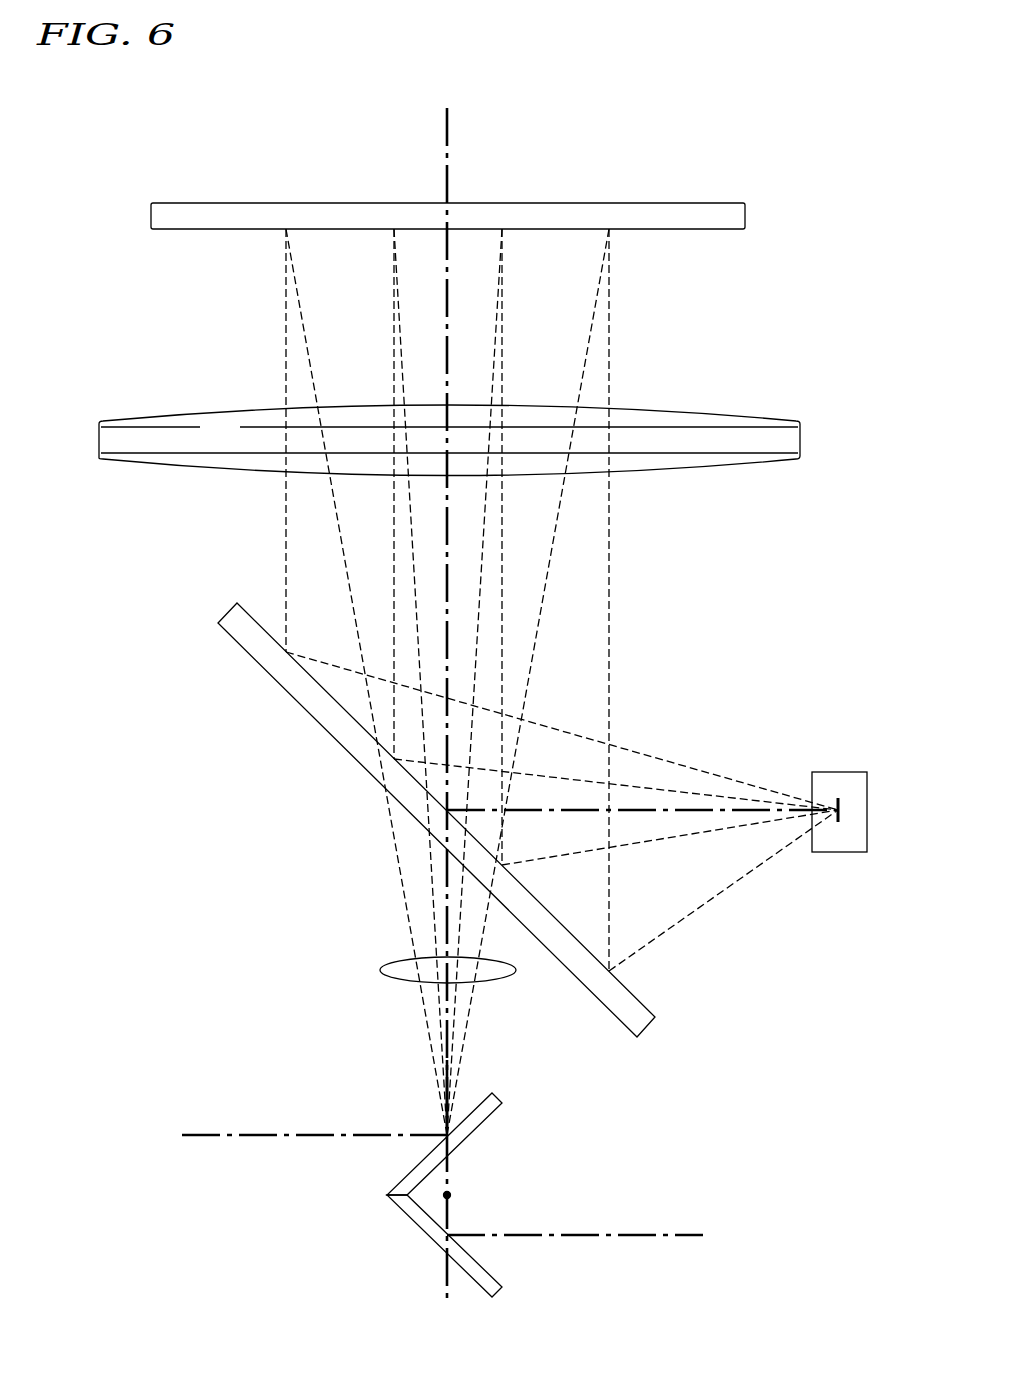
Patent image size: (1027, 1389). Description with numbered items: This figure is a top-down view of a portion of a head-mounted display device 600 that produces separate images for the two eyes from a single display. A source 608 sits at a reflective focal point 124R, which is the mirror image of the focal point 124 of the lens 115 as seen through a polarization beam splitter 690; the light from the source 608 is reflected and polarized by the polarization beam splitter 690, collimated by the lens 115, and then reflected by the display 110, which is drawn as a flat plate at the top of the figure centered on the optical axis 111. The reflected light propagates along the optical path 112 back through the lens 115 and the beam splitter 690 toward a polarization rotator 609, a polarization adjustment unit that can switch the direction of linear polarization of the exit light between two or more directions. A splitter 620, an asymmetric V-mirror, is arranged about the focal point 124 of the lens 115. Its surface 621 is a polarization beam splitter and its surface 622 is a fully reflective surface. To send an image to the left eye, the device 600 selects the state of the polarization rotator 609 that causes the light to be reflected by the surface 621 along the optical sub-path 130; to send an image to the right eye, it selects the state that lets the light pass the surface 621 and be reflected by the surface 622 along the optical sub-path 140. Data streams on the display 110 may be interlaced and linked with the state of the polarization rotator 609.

The device 600 is at (126, 134).
The display 110 is at (642, 202).
The optical axis 111 is at (447, 121).
The optical path 112 is at (446, 1061).
The lens 115 is at (98, 440).
The focal point 124 is at (456, 1195).
The reflective focal point 124R is at (843, 806).
The optical sub-path 130 is at (273, 1138).
The optical sub-path 140 is at (608, 1238).
The source 608 is at (856, 853).
The polarization rotator 609 is at (381, 970).
The splitter 620 is at (431, 1198).
The surface 621 is at (479, 1134).
The surface 622 is at (432, 1240).
The polarization beam splitter 690 is at (280, 684).